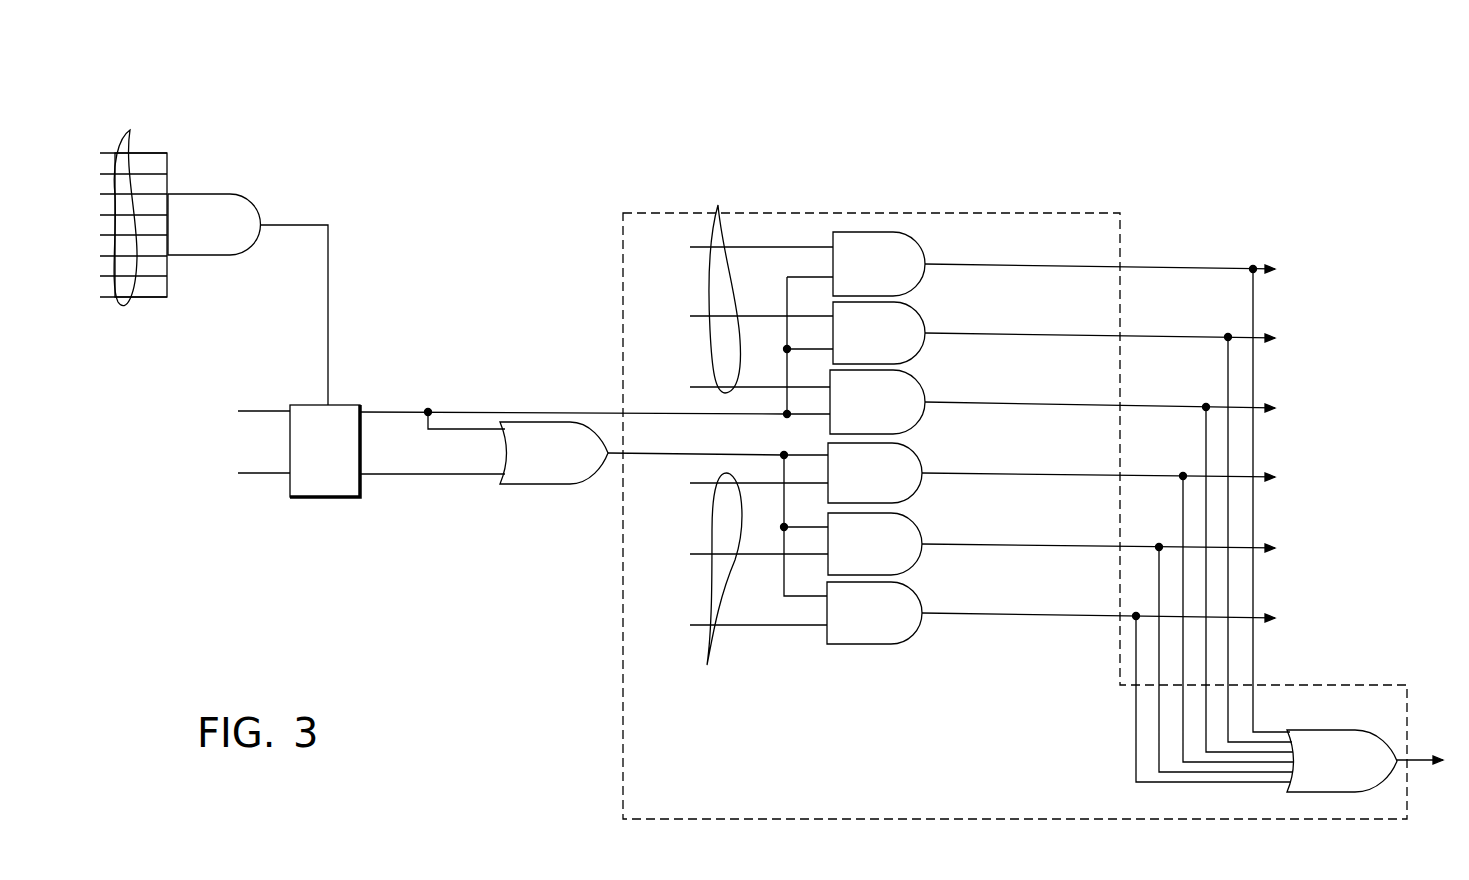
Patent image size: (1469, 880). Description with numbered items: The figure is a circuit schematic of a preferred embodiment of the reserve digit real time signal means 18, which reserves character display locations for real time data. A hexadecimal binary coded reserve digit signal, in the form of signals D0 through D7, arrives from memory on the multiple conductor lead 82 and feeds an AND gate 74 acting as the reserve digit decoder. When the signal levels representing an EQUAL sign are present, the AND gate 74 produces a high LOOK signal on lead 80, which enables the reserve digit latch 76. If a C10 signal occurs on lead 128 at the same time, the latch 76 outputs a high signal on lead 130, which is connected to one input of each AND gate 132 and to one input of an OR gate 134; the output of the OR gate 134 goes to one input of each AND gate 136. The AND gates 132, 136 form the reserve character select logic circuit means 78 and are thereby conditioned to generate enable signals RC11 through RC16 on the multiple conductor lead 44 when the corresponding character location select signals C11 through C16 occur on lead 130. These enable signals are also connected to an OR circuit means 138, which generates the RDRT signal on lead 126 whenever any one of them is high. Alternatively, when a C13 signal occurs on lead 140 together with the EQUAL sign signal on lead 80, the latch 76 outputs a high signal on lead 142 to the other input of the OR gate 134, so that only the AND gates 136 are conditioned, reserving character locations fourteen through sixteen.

The reserve digit real time signal means 18 is at (567, 135).
The multiple conductor lead 82 is at (119, 146).
The AND gate 74 is at (228, 194).
The lead 80 is at (333, 330).
The reserve digit latch 76 is at (328, 497).
The lead 128 is at (263, 412).
The lead 140 is at (262, 474).
The lead 130 is at (386, 412).
The lead 142 is at (412, 474).
The OR gate 134 is at (520, 484).
The reserve character select logic circuit means 78 is at (952, 212).
The AND gates 132 is at (908, 383).
The AND gates 136 is at (902, 598).
The OR circuit means 138 is at (1312, 730).
The lead 126 is at (1413, 760).
The multiple conductor lead 44 is at (1333, 240).